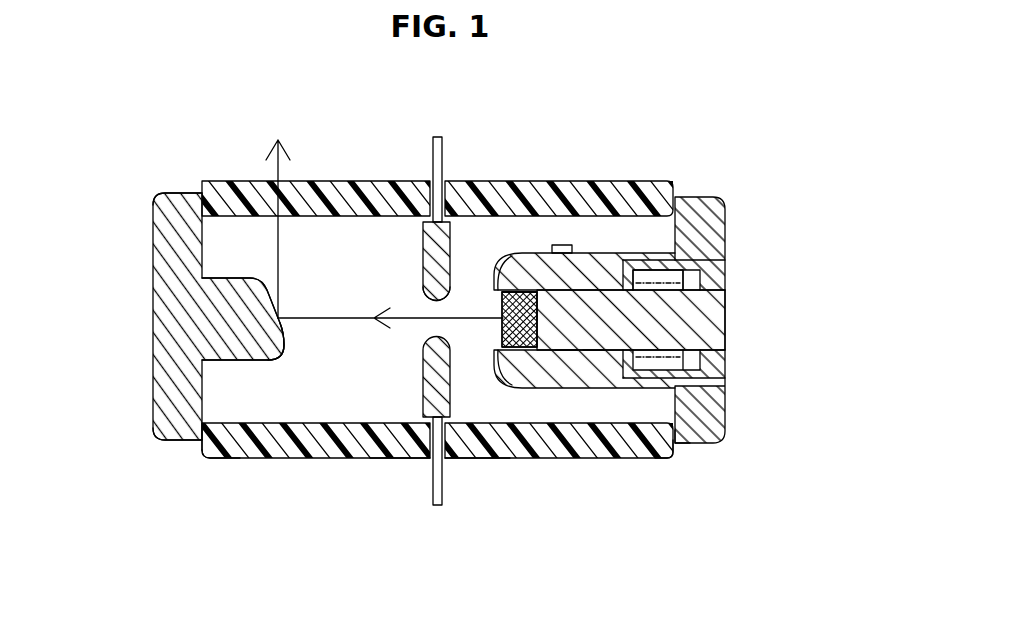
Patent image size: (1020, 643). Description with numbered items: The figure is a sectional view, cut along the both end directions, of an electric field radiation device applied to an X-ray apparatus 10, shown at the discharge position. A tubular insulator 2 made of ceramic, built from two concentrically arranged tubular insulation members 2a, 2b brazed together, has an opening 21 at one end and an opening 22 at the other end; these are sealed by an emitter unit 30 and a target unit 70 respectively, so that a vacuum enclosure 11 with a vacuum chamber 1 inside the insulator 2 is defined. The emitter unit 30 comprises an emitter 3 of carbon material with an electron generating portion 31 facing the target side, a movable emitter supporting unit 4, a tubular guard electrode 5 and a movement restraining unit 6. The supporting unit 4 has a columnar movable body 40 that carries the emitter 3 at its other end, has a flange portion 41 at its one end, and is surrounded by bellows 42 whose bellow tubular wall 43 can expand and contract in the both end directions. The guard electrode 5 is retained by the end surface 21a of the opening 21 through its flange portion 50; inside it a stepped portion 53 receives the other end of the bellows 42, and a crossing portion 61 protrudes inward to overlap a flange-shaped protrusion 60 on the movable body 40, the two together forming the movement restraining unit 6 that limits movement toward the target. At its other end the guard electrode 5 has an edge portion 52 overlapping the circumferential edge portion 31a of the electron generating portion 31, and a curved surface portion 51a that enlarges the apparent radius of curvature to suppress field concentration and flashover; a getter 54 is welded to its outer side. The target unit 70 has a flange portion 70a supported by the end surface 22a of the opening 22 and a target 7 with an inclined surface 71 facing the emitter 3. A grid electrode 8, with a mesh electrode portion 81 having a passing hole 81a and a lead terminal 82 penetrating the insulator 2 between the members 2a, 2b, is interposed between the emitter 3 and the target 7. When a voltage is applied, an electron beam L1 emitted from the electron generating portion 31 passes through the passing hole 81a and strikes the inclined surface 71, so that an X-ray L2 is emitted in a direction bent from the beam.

The X-ray apparatus 10 is at (128, 135).
The vacuum enclosure 11 is at (200, 135).
The vacuum chamber 1 is at (280, 427).
The tubular insulator 2 is at (477, 546).
The tubular insulation member 2a is at (488, 450).
The tubular insulation member 2b is at (387, 458).
The opening 22 is at (217, 455).
The end surface 22a is at (200, 447).
The target unit 70 is at (147, 440).
The flange portion 70a is at (170, 215).
The target 7 is at (248, 355).
The inclined surface 71 is at (285, 333).
The emitter unit 30 is at (738, 462).
The flange portion 50 is at (700, 222).
The opening 21 is at (670, 444).
The end surface 21a is at (677, 445).
The movable emitter supporting unit 4 is at (745, 270).
The movable body 40 is at (590, 295).
The flange portion 41 is at (718, 352).
The bellows 42 is at (720, 293).
The bellow tubular wall 43 is at (695, 268).
The guard electrode 5 is at (540, 389).
The stepped portion 53 is at (612, 275).
The getter 54 is at (562, 245).
The edge portion 52 is at (498, 290).
The emitter 3 is at (536, 388).
The curved surface portion 51a is at (503, 379).
The movement restraining unit 6 is at (552, 534).
The protrusion 60 is at (594, 362).
The crossing portion 61 is at (565, 362).
The electron generating portion 31 is at (502, 327).
The circumferential edge portion 31a is at (520, 292).
The electrode portion 81 is at (433, 255).
The passing hole 81a is at (425, 296).
The lead terminal 82 is at (447, 160).
The grid electrode 8 is at (433, 382).
The electron beam L1 is at (296, 317).
The X-ray L2 is at (280, 228).